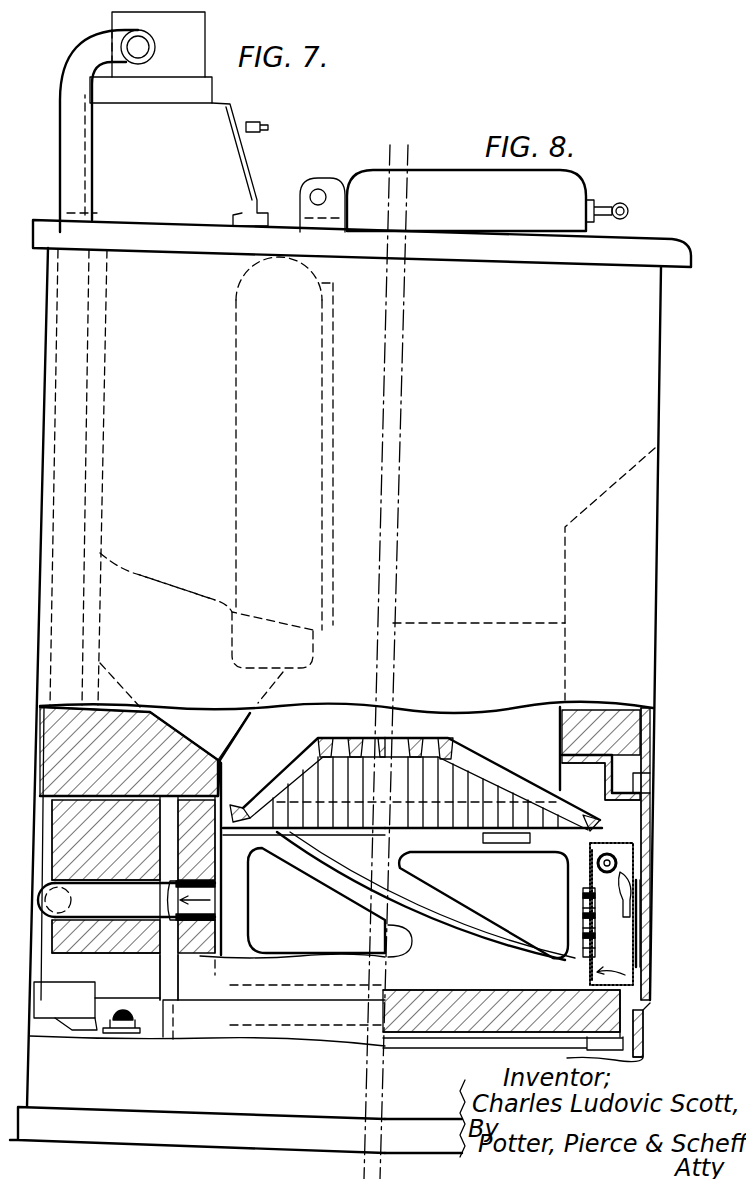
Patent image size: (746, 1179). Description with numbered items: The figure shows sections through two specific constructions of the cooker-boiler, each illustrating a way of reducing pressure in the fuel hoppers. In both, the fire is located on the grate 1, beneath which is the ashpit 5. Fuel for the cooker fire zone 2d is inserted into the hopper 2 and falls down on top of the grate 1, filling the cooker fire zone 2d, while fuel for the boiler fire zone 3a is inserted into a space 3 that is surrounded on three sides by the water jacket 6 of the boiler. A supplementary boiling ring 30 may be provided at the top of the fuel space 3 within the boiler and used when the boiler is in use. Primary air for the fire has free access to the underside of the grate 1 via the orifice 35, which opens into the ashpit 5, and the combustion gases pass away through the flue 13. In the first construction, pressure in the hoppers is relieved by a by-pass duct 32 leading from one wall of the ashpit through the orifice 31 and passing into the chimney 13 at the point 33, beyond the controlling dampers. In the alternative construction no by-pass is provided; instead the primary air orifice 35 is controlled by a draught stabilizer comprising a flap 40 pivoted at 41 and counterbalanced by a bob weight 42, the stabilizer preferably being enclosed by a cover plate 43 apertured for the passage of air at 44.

In FIG. 7, the grate 1 is at (318, 742).
In FIG. 8, the hopper 2 is at (554, 633).
In FIG. 8, the cooker fire zone 2d is at (524, 724).
In FIG. 7, the fuel space 3 is at (216, 482).
In FIG. 7, the boiler fire zone 3a is at (200, 736).
In FIG. 7, the ashpit 5 is at (316, 900).
In FIG. 8, the ashpit 5 is at (483, 905).
In FIG. 7, the water jacket 6 is at (186, 582).
In FIG. 7, the flue 13 is at (205, 90).
In FIG. 7, the supplementary boiling ring 30 is at (168, 234).
In FIG. 7, the orifice 31 is at (213, 902).
In FIG. 7, the by-pass duct 32 is at (75, 176).
In FIG. 7, the point 33 is at (130, 34).
In FIG. 8, the primary air orifice 35 is at (640, 920).
In FIG. 8, the flap 40 is at (634, 948).
In FIG. 8, the pivot 41 is at (630, 877).
In FIG. 8, the bob weight 42 is at (616, 860).
In FIG. 8, the cover plate 43 is at (590, 878).
In FIG. 8, the aperture 44 is at (583, 917).